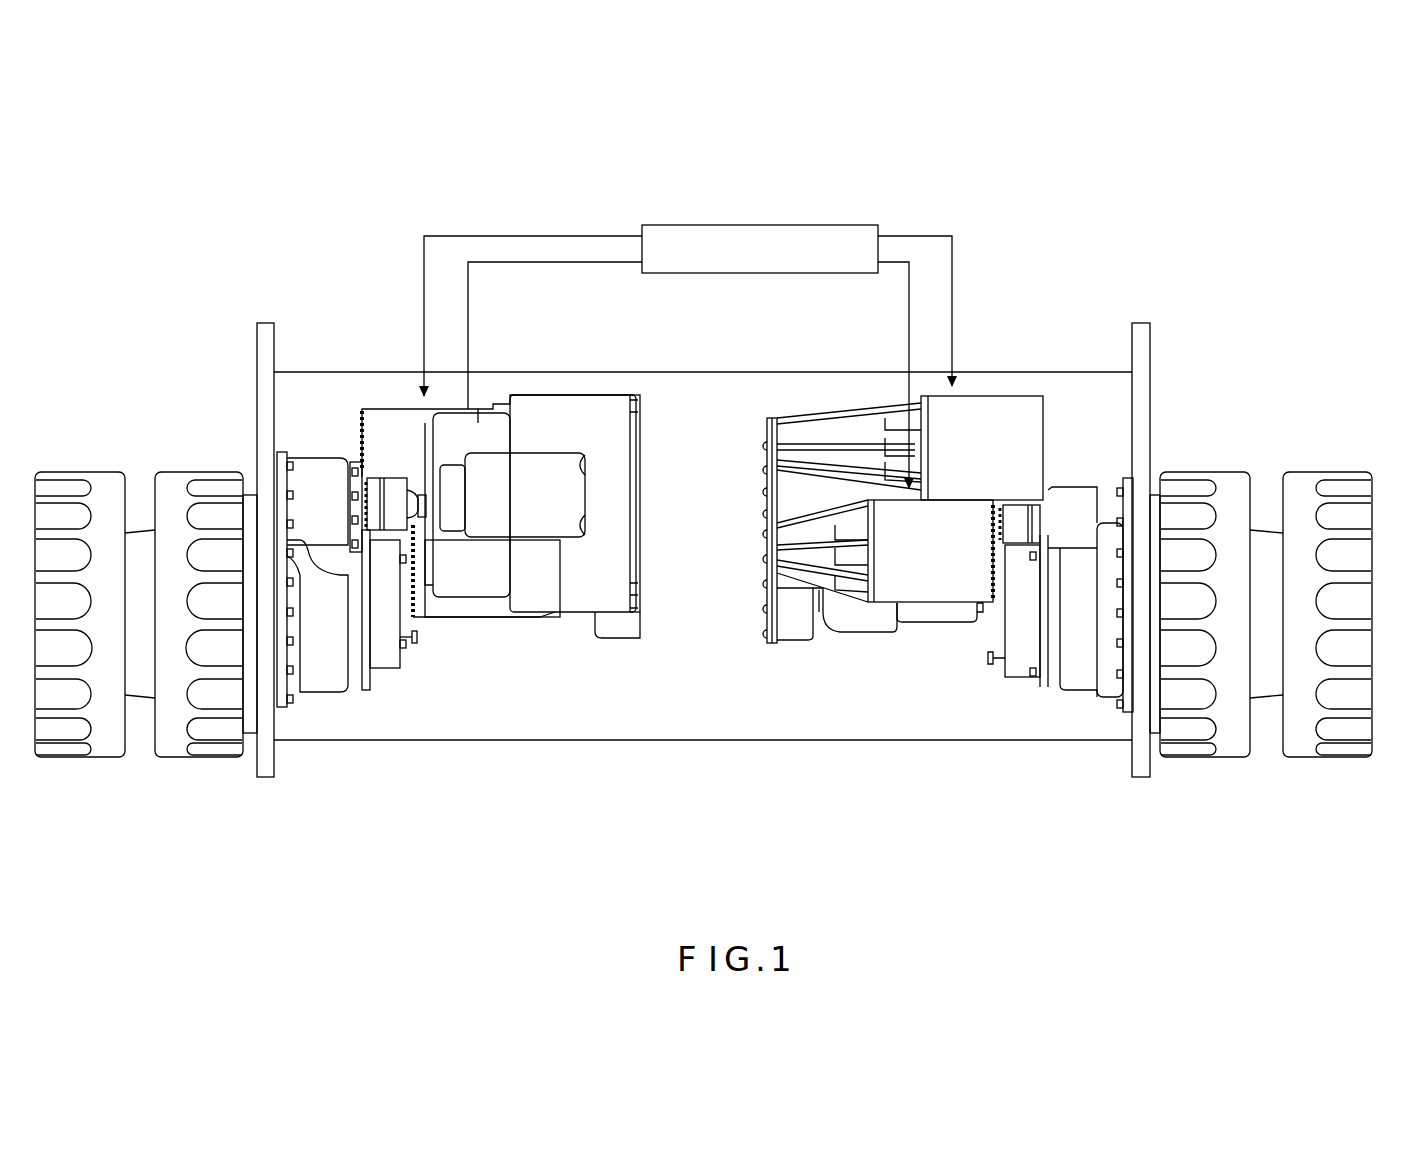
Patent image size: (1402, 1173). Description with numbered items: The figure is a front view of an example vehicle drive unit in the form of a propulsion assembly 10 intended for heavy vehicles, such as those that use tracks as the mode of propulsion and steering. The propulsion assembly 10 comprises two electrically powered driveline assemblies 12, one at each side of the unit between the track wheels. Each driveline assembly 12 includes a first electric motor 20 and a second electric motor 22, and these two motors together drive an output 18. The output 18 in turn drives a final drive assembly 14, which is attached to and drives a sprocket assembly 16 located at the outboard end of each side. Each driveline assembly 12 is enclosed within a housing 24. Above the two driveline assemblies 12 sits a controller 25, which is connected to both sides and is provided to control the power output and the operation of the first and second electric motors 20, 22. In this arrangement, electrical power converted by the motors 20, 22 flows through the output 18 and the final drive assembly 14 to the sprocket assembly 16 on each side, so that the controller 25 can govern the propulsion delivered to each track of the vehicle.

The propulsion assembly 10 is at (1012, 212).
The driveline assembly 12 is at (560, 669).
The final drive assembly 14 is at (330, 645).
The sprocket assembly 16 is at (178, 784).
The output 18 is at (392, 485).
The first electric motor 20 is at (380, 425).
The second electric motor 22 is at (438, 605).
The housing 24 is at (527, 595).
The controller 25 is at (780, 262).